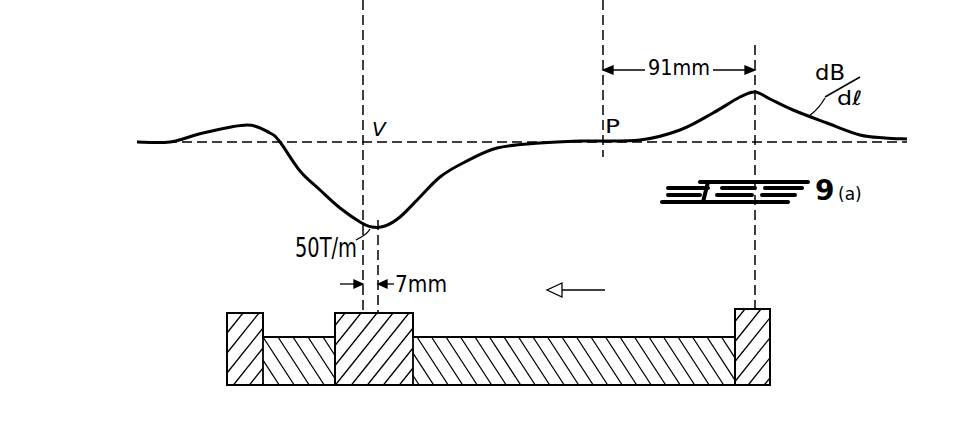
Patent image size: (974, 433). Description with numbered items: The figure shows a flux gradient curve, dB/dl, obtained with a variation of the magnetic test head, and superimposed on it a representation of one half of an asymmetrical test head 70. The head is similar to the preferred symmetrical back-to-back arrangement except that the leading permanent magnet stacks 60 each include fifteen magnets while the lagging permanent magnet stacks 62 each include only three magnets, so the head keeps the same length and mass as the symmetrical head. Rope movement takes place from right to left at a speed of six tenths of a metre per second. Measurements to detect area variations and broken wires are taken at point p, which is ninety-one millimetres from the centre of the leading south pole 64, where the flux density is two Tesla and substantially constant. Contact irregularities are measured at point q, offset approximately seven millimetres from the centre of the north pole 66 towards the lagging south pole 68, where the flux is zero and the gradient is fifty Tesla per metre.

The leading permanent magnet stack 60 is at (585, 373).
The lagging permanent magnet stack 62 is at (303, 373).
The leading south pole 64 is at (752, 373).
The north pole 66 is at (375, 373).
The lagging south pole 68 is at (228, 357).
The asymmetrical test head 70 is at (197, 306).